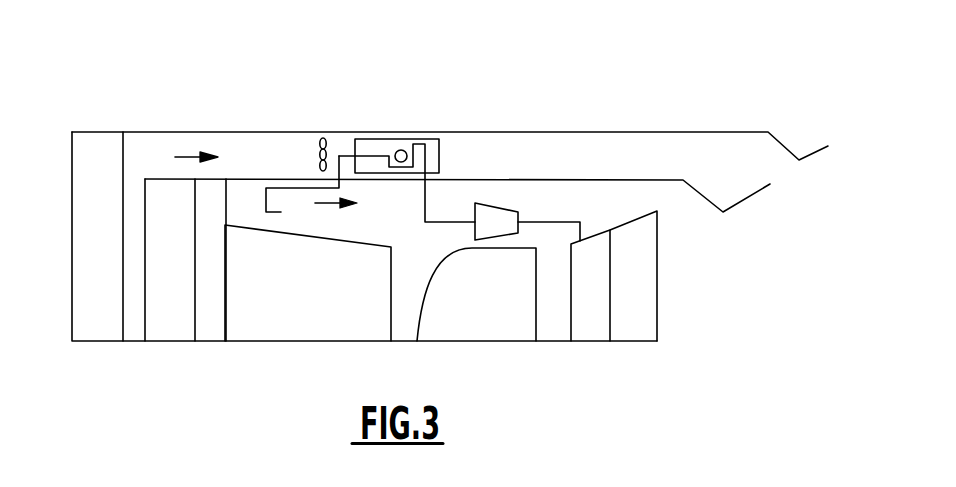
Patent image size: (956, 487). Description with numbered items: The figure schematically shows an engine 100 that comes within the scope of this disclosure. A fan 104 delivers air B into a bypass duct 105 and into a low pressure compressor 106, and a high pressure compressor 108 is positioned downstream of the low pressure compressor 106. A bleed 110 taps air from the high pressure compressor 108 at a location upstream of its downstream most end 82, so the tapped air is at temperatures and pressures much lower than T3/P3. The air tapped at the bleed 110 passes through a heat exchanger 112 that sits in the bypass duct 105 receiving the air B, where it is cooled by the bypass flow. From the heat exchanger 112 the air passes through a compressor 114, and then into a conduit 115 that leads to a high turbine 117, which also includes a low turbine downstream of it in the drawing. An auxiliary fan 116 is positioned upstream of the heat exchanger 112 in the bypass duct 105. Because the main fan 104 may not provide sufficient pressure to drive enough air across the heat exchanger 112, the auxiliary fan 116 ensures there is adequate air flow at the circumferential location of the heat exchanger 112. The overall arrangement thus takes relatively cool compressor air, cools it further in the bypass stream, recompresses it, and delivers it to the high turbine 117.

The engine 100 is at (365, 73).
The fan 104 is at (100, 152).
The bypass duct 105 is at (242, 153).
The low pressure compressor 106 is at (172, 325).
The high pressure compressor 108 is at (265, 327).
The bleed 110 is at (281, 212).
The downstream most end 82 is at (390, 247).
The heat exchanger 112 is at (400, 139).
The compressor 114 is at (488, 203).
The conduit 115 is at (553, 222).
The auxiliary fan 116 is at (321, 135).
The high turbine 117 is at (593, 327).